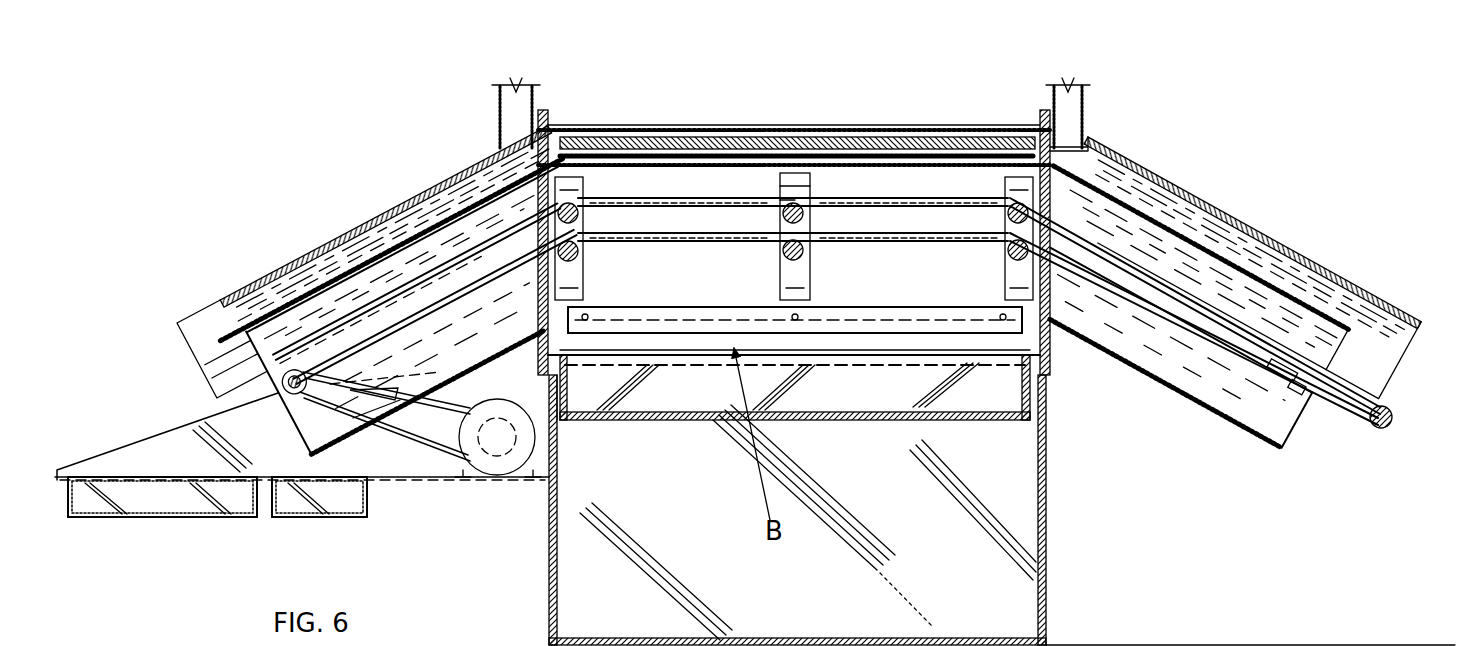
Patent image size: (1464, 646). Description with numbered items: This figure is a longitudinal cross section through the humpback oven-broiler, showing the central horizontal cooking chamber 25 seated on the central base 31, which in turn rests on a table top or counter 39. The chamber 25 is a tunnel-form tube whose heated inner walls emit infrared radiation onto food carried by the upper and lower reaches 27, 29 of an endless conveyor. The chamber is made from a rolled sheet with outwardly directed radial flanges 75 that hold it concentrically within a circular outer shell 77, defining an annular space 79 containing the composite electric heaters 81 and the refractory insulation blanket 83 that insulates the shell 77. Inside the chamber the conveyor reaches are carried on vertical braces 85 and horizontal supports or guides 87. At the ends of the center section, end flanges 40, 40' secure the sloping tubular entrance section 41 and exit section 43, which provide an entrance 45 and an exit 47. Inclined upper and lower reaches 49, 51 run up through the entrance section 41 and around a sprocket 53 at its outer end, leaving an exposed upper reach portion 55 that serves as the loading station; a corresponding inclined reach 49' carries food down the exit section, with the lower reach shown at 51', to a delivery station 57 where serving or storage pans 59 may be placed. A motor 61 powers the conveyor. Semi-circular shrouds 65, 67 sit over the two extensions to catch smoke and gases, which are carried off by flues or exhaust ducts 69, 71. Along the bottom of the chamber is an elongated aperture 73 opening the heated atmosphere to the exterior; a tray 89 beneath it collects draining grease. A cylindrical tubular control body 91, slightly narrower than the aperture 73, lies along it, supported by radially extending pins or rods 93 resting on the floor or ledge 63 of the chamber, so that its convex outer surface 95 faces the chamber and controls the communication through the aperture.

The cooking chamber 25 is at (753, 162).
The upper reach of conveyor 27 is at (667, 197).
The lower reach of conveyor 29 is at (803, 255).
The central base 31 is at (1047, 522).
The table top or counter 39 is at (1262, 645).
The end flange 40 is at (1166, 384).
The end flange 40' is at (428, 392).
The entrance section 41 is at (1203, 247).
The exit section 43 is at (383, 240).
The entrance 45 is at (1303, 432).
The exit 47 is at (256, 357).
The inclined upper reach of conveyor 49 is at (1217, 247).
The inclined reach of conveyor 49' is at (392, 249).
The inclined lower reach of conveyor 51 is at (1210, 311).
The track rail 51' is at (374, 283).
The sprocket 53 is at (1393, 419).
The exposed upper reach portion 55 is at (1350, 388).
The delivery station 57 is at (147, 437).
The serving or storage pans 59 is at (143, 517).
The motor 61 is at (481, 478).
The floor of chamber 63 is at (612, 322).
The shroud 65 is at (1223, 207).
The shroud 67 is at (403, 205).
The flue or exhaust duct 69 is at (1086, 115).
The flue or exhaust duct 71 is at (500, 102).
The elongated aperture 73 is at (562, 360).
The radial flanges 75 is at (905, 342).
The outer shell 77 is at (730, 150).
The annular space 79 is at (1057, 152).
The composite electric heaters 81 is at (620, 156).
The refractory insulation blanket 83 is at (648, 170).
The vertical braces 85 is at (590, 178).
The horizontal supports or guides 87 is at (556, 212).
The trough, tray or pan 89 is at (813, 322).
The cylindrical tubular control body 91 is at (663, 330).
The pins or rods 93 is at (585, 320).
The outer surface of control body 95 is at (687, 345).